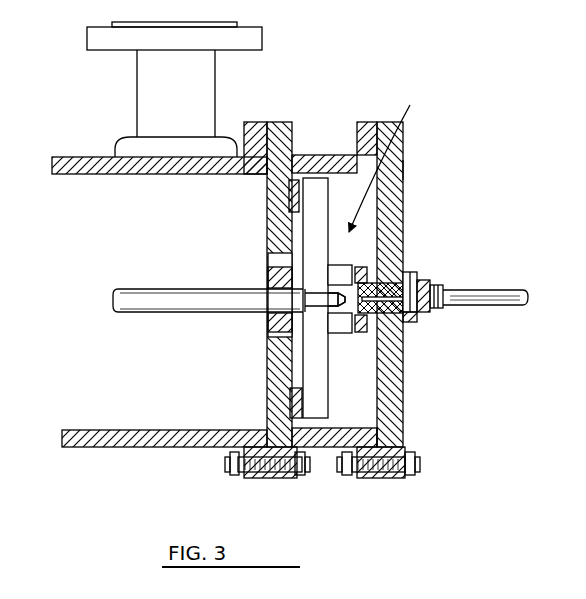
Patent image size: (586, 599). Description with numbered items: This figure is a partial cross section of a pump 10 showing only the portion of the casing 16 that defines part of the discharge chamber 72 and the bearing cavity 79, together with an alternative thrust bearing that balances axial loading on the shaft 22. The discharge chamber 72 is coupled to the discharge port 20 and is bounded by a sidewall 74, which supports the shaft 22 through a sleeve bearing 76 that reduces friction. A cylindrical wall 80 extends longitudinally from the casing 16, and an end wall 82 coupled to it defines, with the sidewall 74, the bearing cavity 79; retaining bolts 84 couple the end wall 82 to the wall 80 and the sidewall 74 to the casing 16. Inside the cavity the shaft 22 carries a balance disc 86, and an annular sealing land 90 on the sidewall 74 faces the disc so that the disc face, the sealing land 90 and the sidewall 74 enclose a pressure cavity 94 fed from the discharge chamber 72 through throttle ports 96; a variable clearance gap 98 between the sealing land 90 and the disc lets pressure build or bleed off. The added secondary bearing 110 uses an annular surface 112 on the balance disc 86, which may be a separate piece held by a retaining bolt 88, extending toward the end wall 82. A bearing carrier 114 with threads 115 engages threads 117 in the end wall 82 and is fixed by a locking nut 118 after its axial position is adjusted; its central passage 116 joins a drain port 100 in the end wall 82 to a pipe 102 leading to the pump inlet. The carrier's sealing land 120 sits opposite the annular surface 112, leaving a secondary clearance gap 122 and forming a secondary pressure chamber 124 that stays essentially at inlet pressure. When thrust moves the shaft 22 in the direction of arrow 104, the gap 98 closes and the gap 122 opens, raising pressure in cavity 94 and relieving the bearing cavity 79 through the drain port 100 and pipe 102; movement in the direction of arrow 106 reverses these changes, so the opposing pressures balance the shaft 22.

The valve actuator assembly 10 is at (321, 48).
The casing 16 is at (80, 170).
The discharge port 20 is at (137, 75).
The shaft 22 is at (222, 310).
The discharge chamber 72 is at (130, 410).
The sidewall 74 is at (268, 230).
The sleeve bearing 76 is at (268, 323).
The bearing cavity 79 is at (372, 410).
The cylindrical wall 80 is at (330, 155).
The end wall 82 is at (398, 124).
The retaining bolts 84 is at (420, 467).
The balance disc 86 is at (320, 410).
The retaining bolt 88 is at (322, 305).
The sealing land 90 is at (290, 402).
The pressure cavity 94 is at (292, 212).
The throttle ports 96 is at (267, 260).
The variable clearance gap 98 is at (315, 176).
The drain port 100 is at (421, 259).
The pipe 102 is at (505, 289).
The arrow 104 is at (170, 278).
The arrow 106 is at (177, 326).
The secondary bearing 110 is at (398, 167).
The annular surface 112 is at (353, 330).
The bearing carrier 114 is at (408, 322).
The threads 115 is at (362, 280).
The central passage 116 is at (428, 280).
The threads 117 is at (405, 332).
The locking nut 118 is at (410, 313).
The sealing land 120 is at (365, 268).
The secondary clearance gap 122 is at (368, 268).
The secondary pressure chamber 124 is at (405, 330).